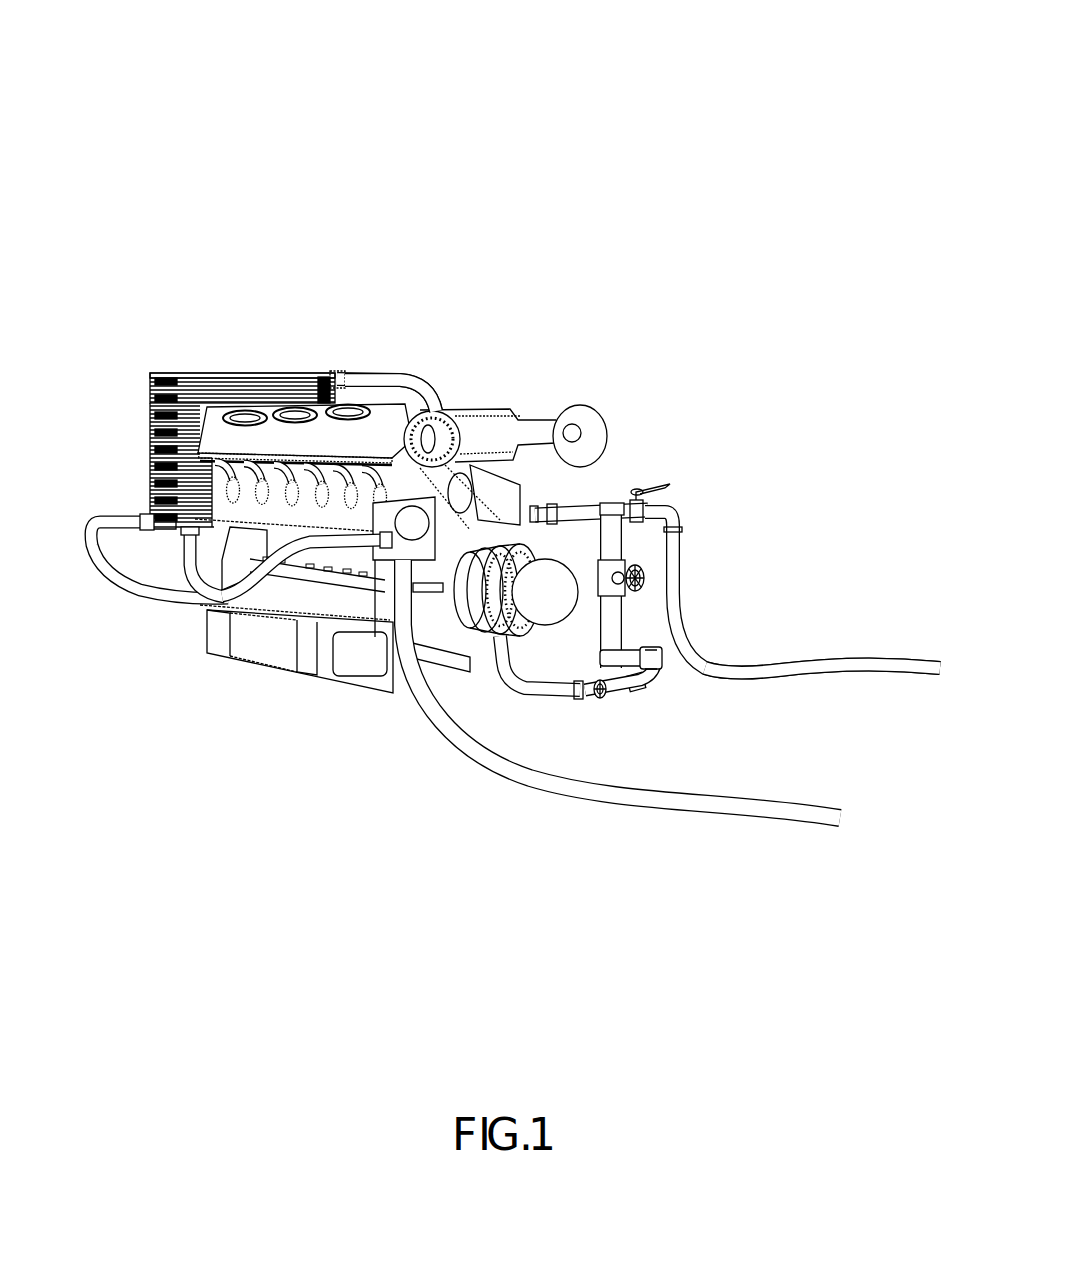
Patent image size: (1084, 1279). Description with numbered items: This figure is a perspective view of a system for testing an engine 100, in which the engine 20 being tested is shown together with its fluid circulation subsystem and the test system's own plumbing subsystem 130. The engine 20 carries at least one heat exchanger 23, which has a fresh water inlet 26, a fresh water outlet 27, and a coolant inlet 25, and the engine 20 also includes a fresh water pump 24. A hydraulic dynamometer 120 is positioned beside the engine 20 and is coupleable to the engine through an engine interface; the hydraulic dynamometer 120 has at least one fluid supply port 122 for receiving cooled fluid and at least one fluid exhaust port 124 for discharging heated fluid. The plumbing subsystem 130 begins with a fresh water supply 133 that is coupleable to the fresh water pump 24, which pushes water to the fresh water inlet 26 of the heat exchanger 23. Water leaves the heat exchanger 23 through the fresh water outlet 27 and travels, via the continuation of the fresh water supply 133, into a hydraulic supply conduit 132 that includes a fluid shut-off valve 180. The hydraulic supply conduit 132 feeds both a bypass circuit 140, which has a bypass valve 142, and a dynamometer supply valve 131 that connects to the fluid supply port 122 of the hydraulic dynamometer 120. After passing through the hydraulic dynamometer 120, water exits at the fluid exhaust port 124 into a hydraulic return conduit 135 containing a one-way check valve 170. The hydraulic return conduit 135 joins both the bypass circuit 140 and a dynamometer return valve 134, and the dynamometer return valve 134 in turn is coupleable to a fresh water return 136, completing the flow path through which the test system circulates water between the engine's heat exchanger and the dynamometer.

The system for testing an engine 100 is at (598, 82).
The plumbing subsystem 130 is at (636, 107).
The engine 20 is at (155, 453).
The heat exchanger 23 is at (185, 372).
The fresh water outlet 27 is at (345, 370).
The hydraulic supply conduit 132 is at (437, 388).
The one-way check valve 170 is at (530, 507).
The hydraulic return conduit 135 is at (580, 510).
The dynamometer return valve 134 is at (648, 485).
The fresh water inlet 26 is at (140, 517).
The bypass valve 142 is at (643, 577).
The bypass circuit 140 is at (670, 610).
The fluid shut-off valve 180 is at (660, 672).
The coolant inlet 25 is at (182, 548).
The fresh water supply 133 is at (190, 597).
The fresh water pump 24 is at (400, 528).
The fluid exhaust port 124 is at (457, 593).
The hydraulic dynamometer 120 is at (537, 590).
The fluid supply port 122 is at (547, 705).
The dynamometer supply valve 131 is at (612, 692).
The fresh water return 136 is at (903, 665).